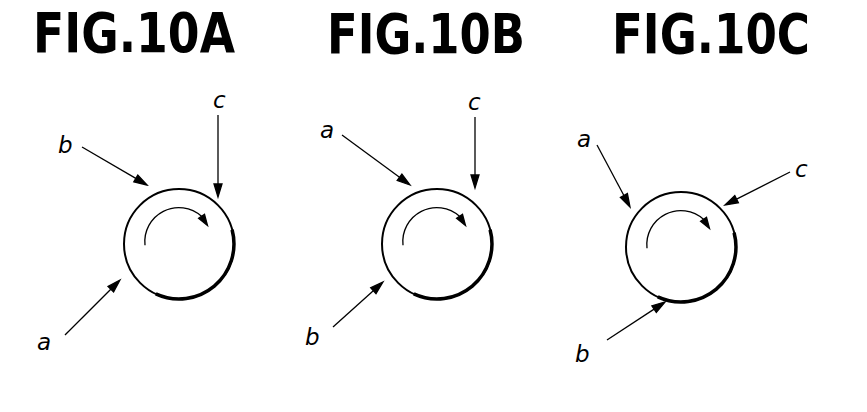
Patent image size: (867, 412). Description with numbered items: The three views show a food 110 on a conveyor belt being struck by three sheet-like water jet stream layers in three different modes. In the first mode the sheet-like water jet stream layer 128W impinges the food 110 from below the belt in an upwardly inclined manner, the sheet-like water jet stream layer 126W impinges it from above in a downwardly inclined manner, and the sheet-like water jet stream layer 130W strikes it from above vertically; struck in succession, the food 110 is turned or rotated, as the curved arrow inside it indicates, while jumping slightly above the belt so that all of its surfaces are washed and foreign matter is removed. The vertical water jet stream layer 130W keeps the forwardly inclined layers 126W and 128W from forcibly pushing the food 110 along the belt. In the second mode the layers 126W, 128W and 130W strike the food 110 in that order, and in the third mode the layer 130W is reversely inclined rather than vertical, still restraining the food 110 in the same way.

In FIG. 10A, the food 110 is at (183, 282).
In FIG. 10B, the food 110 is at (433, 278).
In FIG. 10C, the food 110 is at (703, 277).
In FIG. 10A, the sheet-like water jet stream layer 126W is at (135, 157).
In FIG. 10B, the sheet-like water jet stream layer 126W is at (394, 154).
In FIG. 10C, the sheet-like water jet stream layer 126W is at (645, 176).
In FIG. 10A, the sheet-like water jet stream layer 128W is at (62, 307).
In FIG. 10B, the sheet-like water jet stream layer 128W is at (329, 304).
In FIG. 10C, the sheet-like water jet stream layer 128W is at (606, 320).
In FIG. 10A, the sheet-like water jet stream layer 130W is at (261, 156).
In FIG. 10B, the sheet-like water jet stream layer 130W is at (516, 152).
In FIG. 10C, the sheet-like water jet stream layer 130W is at (783, 197).